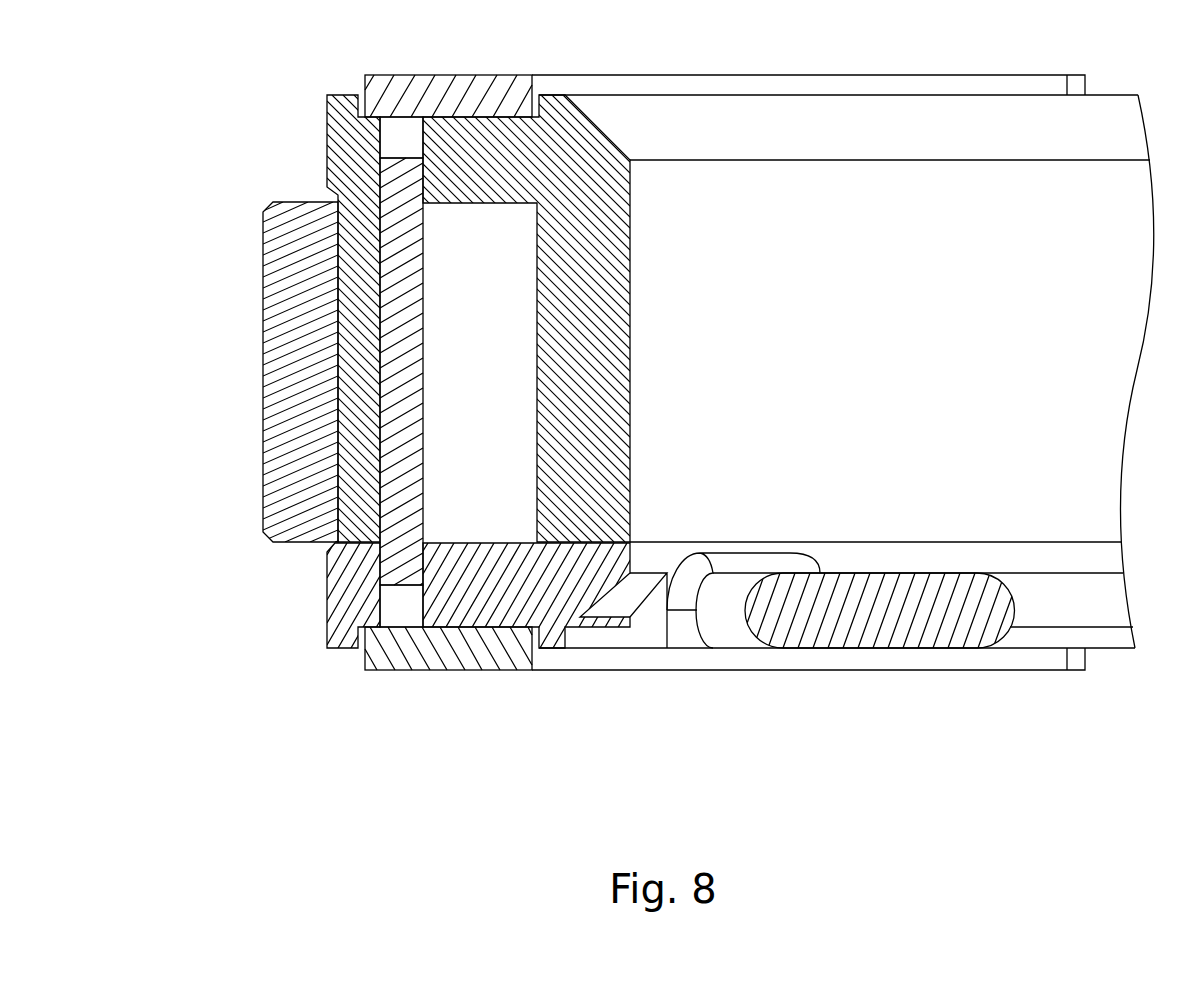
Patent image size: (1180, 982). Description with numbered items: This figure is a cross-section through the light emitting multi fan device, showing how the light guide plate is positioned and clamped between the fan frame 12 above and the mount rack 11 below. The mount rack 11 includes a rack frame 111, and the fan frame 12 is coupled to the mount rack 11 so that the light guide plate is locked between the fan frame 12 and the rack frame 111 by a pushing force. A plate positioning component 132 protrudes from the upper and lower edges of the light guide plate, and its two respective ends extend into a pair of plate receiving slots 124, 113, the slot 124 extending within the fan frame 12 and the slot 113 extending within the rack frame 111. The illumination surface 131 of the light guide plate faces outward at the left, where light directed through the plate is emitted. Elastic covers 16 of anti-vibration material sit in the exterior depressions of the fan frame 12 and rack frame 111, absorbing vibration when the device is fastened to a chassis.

The mount rack 11 is at (320, 596).
The fan frame 12 is at (314, 80).
The elastic cover 16 is at (440, 95).
The rack frame 111 is at (553, 590).
The plate receiving slot 113 is at (396, 596).
The plate receiving slot 124 is at (400, 147).
The illumination surface 131 is at (278, 342).
The plate positioning component 132 is at (400, 180).